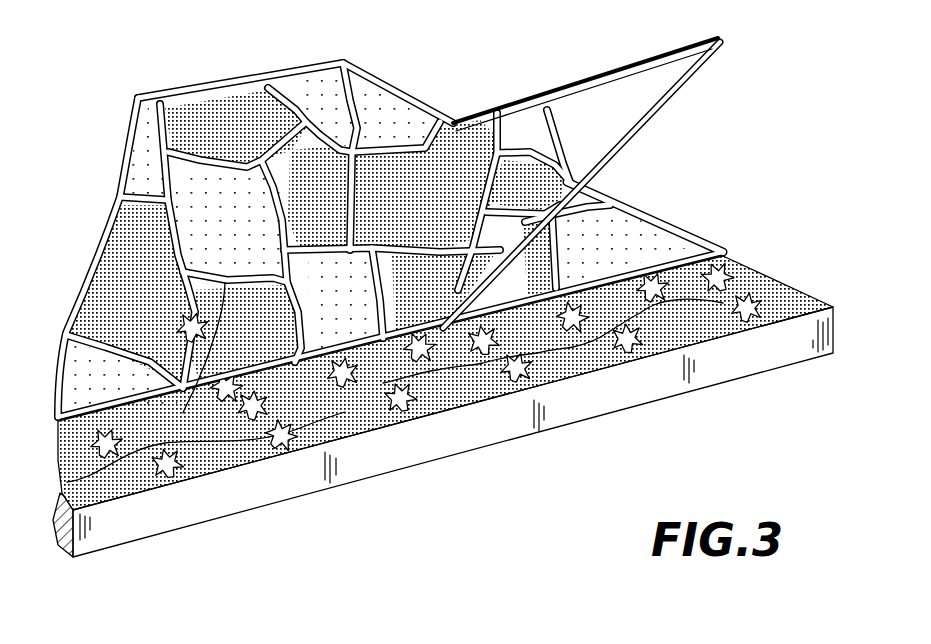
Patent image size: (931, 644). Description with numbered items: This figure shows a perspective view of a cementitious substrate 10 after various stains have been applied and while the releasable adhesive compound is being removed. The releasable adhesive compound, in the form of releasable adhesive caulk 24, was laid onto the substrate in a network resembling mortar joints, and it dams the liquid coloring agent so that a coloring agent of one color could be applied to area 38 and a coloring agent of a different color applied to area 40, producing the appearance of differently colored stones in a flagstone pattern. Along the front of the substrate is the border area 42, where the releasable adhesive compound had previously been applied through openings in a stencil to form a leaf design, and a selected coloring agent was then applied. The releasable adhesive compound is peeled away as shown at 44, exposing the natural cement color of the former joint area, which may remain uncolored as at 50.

The cementitious substrate 10 is at (408, 480).
The releasable adhesive caulk 24 is at (390, 208).
The area 38 is at (223, 117).
The area 40 is at (317, 93).
The border area 42 is at (787, 297).
The peeled releasable adhesive compound 44 is at (628, 63).
The uncolored mortar joint area 50 is at (645, 221).